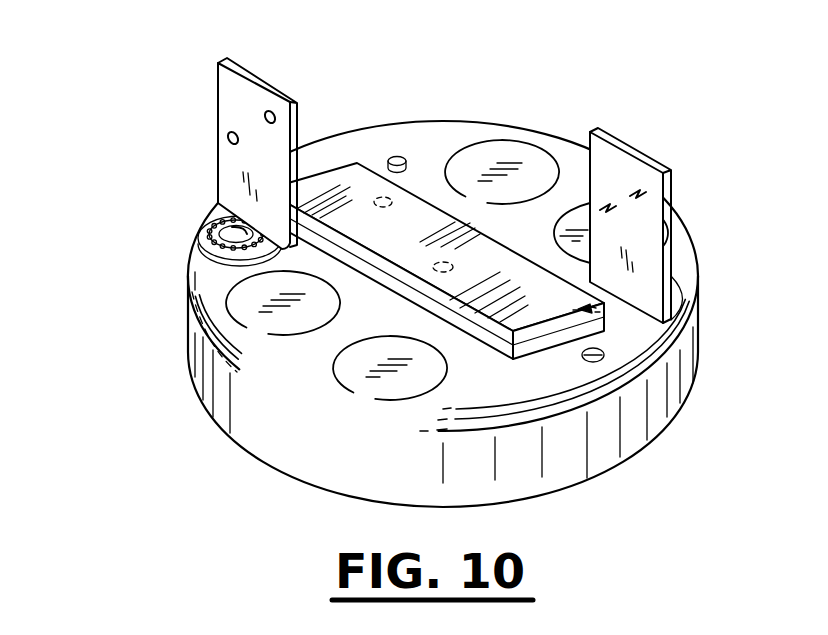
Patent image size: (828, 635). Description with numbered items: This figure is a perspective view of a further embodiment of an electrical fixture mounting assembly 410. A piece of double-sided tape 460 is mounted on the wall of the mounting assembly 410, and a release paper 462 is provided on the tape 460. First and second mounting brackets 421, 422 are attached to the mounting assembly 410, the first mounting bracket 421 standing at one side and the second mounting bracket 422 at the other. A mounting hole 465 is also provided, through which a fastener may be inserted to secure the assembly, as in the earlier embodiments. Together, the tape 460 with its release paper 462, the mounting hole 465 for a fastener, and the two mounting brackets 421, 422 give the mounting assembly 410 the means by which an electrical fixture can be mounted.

The electrical fixture mounting assembly 410 is at (153, 272).
The first mounting bracket 421 is at (230, 98).
The second mounting bracket 422 is at (637, 140).
The piece of double-sided tape 460 is at (553, 343).
The release paper 462 is at (426, 222).
The mounting hole 465 is at (381, 197).